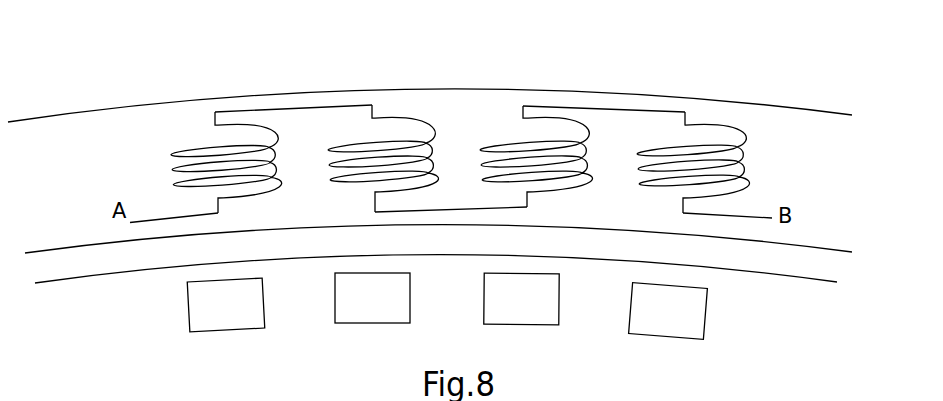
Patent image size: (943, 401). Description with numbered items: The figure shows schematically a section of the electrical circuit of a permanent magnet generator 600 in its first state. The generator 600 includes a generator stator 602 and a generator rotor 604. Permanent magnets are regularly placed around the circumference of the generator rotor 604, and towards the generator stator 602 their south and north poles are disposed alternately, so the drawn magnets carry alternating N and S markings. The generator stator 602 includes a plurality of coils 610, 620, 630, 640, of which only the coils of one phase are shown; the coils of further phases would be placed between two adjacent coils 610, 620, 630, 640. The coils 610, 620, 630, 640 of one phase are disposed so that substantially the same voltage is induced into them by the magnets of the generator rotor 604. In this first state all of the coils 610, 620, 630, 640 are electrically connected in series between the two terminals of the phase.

The permanent magnet generator 600 is at (130, 75).
The generator stator 602 is at (88, 180).
The generator rotor 604 is at (105, 348).
The coil 610 is at (202, 100).
The coil 620 is at (394, 92).
The coil 630 is at (536, 88).
The coil 640 is at (716, 91).